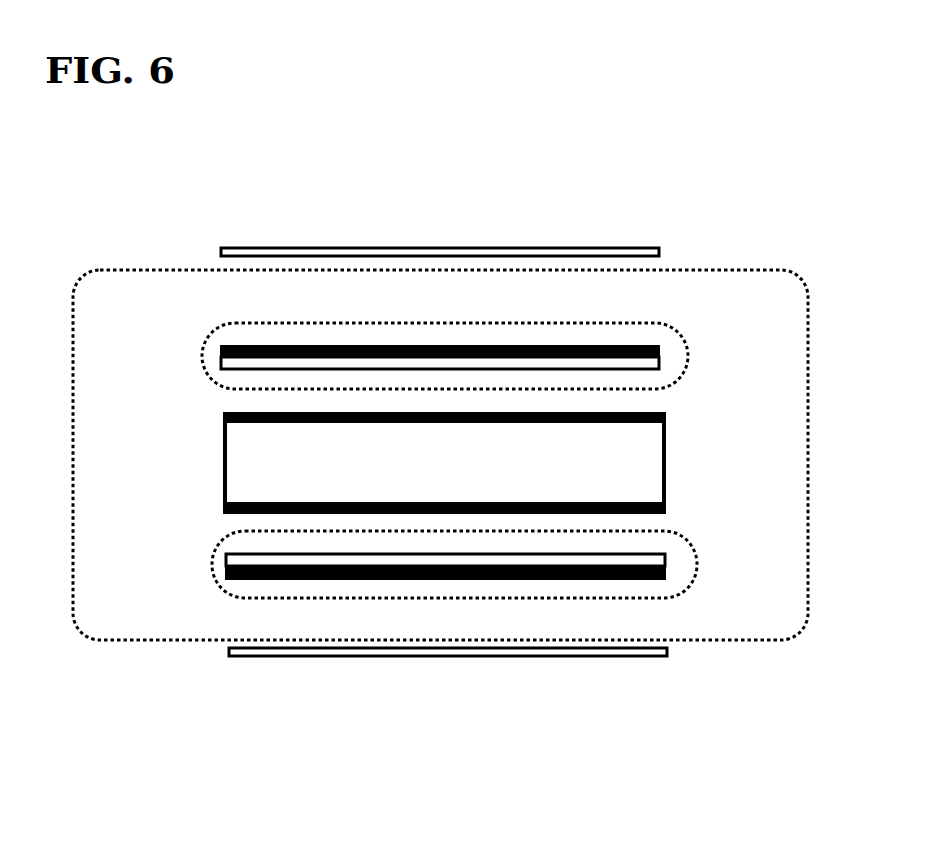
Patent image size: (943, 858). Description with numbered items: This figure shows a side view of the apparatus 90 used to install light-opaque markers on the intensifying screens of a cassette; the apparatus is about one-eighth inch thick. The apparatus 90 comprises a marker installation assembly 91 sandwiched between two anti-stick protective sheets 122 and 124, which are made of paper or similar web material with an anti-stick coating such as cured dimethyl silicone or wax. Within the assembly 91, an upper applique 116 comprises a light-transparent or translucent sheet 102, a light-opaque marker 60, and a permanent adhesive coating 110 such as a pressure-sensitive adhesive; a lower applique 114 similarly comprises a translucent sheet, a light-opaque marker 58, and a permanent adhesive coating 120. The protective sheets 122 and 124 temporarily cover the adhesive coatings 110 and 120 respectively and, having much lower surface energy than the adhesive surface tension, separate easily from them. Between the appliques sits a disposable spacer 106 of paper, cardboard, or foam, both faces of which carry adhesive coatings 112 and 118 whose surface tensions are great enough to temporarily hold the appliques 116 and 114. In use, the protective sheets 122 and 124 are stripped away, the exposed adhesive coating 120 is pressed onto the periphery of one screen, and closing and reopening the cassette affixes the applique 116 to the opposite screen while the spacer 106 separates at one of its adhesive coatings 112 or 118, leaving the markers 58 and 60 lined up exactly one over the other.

The apparatus 90 is at (440, 515).
The marker installation assembly 91 is at (175, 642).
The anti-stick protective sheet 122 is at (413, 247).
The anti-stick protective sheet 124 is at (453, 658).
The applique 116 is at (203, 355).
The applique 114 is at (212, 565).
The light-opaque marker 60 is at (317, 348).
The adhesive coating 110 is at (493, 324).
The light-transparent or translucent sheet 102 is at (653, 362).
The spacer 106 is at (506, 463).
The adhesive coating 112 is at (650, 412).
The adhesive coating 118 is at (650, 512).
The light-opaque marker 58 is at (505, 596).
The adhesive coating 120 is at (623, 580).